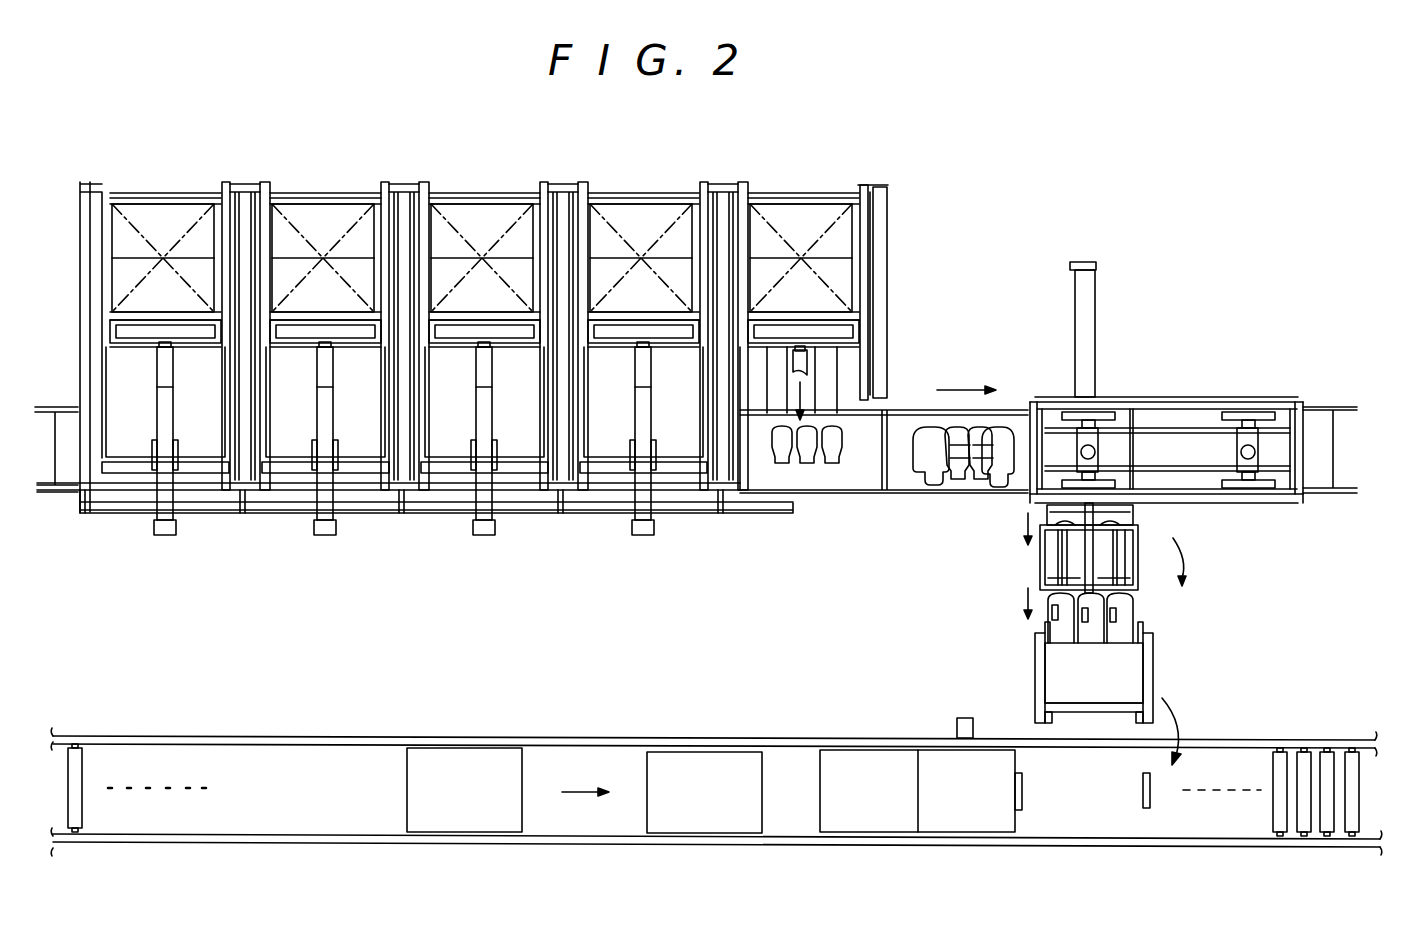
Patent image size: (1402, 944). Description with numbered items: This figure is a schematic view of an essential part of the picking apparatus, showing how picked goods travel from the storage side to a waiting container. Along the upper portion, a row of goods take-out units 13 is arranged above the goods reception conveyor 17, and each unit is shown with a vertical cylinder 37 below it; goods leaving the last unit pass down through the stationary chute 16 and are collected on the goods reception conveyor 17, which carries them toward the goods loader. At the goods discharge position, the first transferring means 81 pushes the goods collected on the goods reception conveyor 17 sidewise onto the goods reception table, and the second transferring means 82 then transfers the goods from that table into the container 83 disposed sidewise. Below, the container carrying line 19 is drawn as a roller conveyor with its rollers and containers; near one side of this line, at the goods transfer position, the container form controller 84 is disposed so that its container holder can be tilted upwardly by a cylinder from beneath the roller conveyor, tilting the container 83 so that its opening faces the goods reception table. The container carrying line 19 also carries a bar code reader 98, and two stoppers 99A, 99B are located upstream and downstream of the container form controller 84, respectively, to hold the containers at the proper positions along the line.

The goods take-out units 13 is at (506, 349).
The stationary chute 16 is at (848, 373).
The goods reception conveyor 17 is at (841, 500).
The container carrying line 19 is at (772, 846).
The lift cylinder 37 is at (649, 407).
The first transferring means 81 is at (1093, 350).
The second transferring means 82 is at (1092, 538).
The container 83 is at (950, 834).
The container form controller 84 is at (1032, 665).
The bar code reader 98 is at (957, 719).
The stopper 99A is at (1150, 798).
The stopper 99B is at (1022, 800).